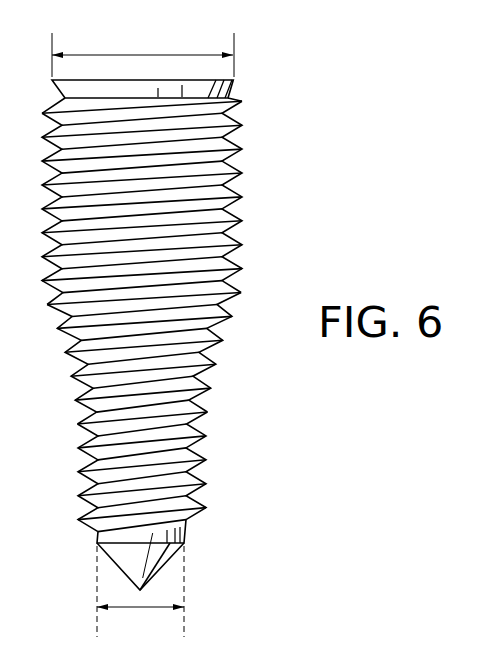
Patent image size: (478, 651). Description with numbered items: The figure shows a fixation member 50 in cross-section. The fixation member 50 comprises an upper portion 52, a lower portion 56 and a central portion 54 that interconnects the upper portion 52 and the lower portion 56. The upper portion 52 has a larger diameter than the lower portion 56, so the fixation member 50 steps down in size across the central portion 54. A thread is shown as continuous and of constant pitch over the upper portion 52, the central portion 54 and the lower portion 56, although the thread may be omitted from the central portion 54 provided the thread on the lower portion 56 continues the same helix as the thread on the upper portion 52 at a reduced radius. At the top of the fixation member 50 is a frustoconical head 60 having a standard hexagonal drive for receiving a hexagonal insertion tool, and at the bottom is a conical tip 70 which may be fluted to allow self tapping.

The fixation member 50 is at (291, 117).
The upper portion 52 is at (222, 176).
The central portion 54 is at (95, 343).
The lower portion 56 is at (180, 472).
The frustoconical head 60 is at (238, 79).
The tip 70 is at (167, 563).